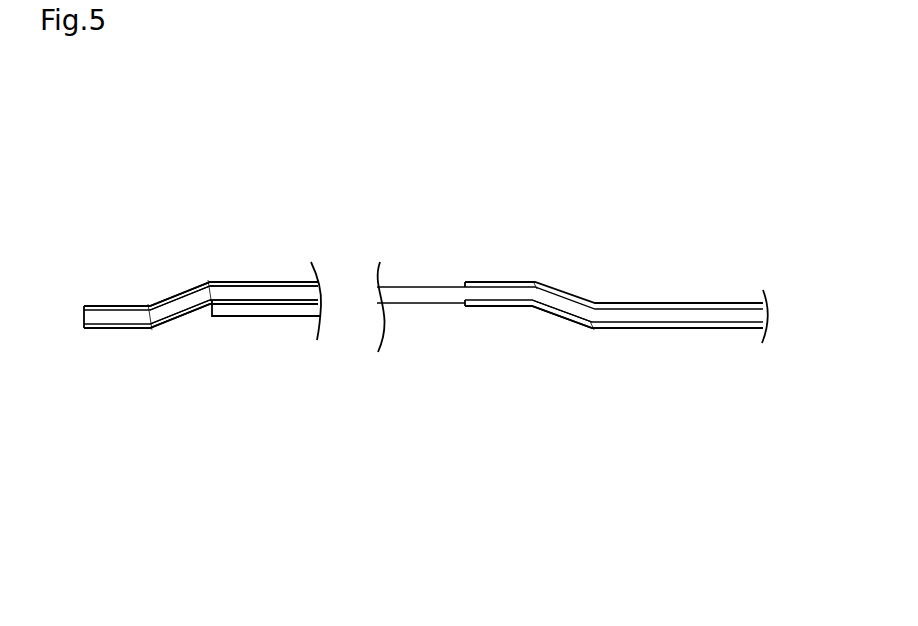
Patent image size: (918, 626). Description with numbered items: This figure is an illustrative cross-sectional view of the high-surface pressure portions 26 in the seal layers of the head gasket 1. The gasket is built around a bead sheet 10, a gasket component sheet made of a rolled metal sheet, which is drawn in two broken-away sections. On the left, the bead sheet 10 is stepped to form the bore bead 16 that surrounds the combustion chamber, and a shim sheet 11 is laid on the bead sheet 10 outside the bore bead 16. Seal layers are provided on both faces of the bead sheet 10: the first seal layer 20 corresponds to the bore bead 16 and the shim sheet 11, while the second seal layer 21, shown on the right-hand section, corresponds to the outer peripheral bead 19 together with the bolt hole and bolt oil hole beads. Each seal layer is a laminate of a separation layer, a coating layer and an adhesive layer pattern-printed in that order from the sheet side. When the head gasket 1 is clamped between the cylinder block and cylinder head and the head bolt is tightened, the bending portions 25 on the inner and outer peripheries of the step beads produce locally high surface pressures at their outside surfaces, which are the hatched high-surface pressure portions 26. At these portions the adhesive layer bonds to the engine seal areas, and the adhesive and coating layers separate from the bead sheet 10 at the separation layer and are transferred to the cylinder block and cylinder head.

The head gasket 1 is at (505, 188).
The bead sheet 10 is at (299, 292).
The shim sheet 11 is at (288, 324).
The bore bead 16 is at (177, 293).
The outer peripheral bead 19 is at (594, 300).
The first seal layer 20 is at (255, 305).
The second seal layer 21 is at (717, 322).
The bending portion 25 is at (152, 318).
The high-surface pressure portion 26 is at (210, 284).